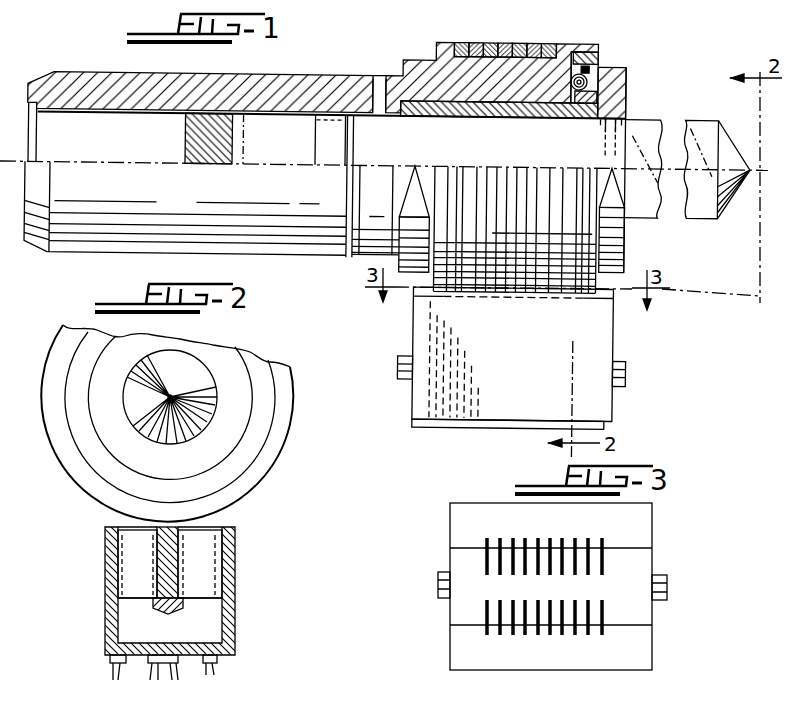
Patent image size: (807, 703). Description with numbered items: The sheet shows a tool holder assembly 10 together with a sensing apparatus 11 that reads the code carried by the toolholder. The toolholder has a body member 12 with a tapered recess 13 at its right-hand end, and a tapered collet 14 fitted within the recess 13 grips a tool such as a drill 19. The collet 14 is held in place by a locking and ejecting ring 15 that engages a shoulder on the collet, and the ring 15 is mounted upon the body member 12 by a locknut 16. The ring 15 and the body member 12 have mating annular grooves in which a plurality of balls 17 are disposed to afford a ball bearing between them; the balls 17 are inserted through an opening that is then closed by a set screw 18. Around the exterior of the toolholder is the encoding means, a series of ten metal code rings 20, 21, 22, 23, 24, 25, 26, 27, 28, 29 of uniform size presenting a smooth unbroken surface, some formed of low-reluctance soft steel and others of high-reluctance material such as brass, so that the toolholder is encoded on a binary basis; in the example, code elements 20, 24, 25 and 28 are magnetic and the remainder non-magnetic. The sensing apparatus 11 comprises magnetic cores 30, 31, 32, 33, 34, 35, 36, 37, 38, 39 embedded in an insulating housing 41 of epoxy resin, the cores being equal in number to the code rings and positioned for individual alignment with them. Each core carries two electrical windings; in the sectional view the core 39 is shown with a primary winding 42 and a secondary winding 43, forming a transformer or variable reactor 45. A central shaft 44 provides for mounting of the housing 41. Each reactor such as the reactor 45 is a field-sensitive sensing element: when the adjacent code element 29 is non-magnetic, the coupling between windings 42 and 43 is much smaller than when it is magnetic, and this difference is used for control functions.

In FIG. 1, the tool holder assembly 10 is at (370, 71).
In FIG. 1, the sensing apparatus 11 is at (408, 414).
In FIG. 1, the body member 12 is at (303, 78).
In FIG. 1, the tapered recess 13 is at (428, 107).
In FIG. 1, the tapered collet 14 is at (607, 115).
In FIG. 2, the tapered collet 14 is at (123, 437).
In FIG. 1, the locking and ejecting ring 15 is at (622, 80).
In FIG. 2, the locking and ejecting ring 15 is at (250, 432).
In FIG. 1, the locknut 16 is at (594, 64).
In FIG. 1, the balls 17 is at (604, 68).
In FIG. 1, the set screw 18 is at (585, 45).
In FIG. 1, the drill 19 is at (707, 133).
In FIG. 2, the drill 19 is at (177, 432).
In FIG. 1, the code ring 20 is at (459, 45).
In FIG. 1, the code ring 21 is at (468, 290).
In FIG. 1, the code ring 22 is at (483, 42).
In FIG. 1, the code ring 23 is at (493, 290).
In FIG. 1, the code ring 24 is at (503, 43).
In FIG. 1, the code ring 25 is at (514, 290).
In FIG. 1, the code ring 26 is at (532, 42).
In FIG. 1, the code ring 27 is at (540, 290).
In FIG. 1, the code ring 28 is at (551, 44).
In FIG. 1, the code ring 29 is at (572, 290).
In FIG. 2, the code ring 29 is at (265, 462).
In FIG. 3, the magnetic core 30 is at (487, 538).
In FIG. 3, the magnetic core 31 is at (500, 635).
In FIG. 3, the magnetic core 32 is at (513, 538).
In FIG. 3, the magnetic core 33 is at (525, 635).
In FIG. 3, the magnetic core 34 is at (539, 540).
In FIG. 3, the magnetic core 35 is at (550, 635).
In FIG. 3, the magnetic core 36 is at (565, 540).
In FIG. 3, the magnetic core 37 is at (575, 635).
In FIG. 3, the magnetic core 38 is at (590, 540).
In FIG. 2, the magnetic core 39 is at (210, 523).
In FIG. 3, the magnetic core 39 is at (602, 635).
In FIG. 2, the insulating housing 41 is at (233, 646).
In FIG. 3, the insulating housing 41 is at (650, 522).
In FIG. 2, the primary winding 42 is at (124, 575).
In FIG. 2, the secondary winding 43 is at (200, 580).
In FIG. 2, the central shaft 44 is at (164, 612).
In FIG. 3, the central shaft 44 is at (667, 588).
In FIG. 2, the variable reactor 45 is at (133, 618).